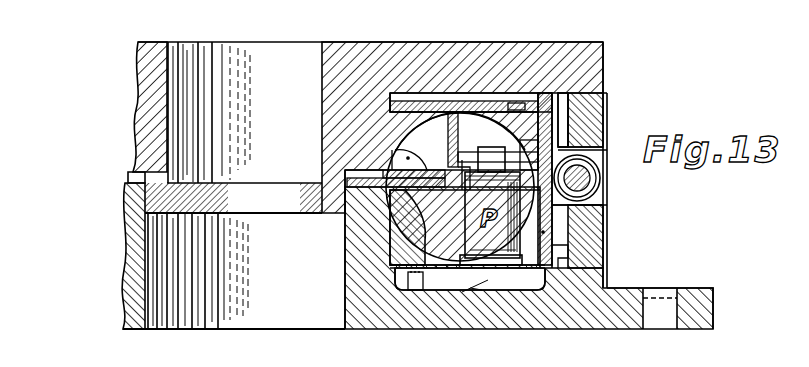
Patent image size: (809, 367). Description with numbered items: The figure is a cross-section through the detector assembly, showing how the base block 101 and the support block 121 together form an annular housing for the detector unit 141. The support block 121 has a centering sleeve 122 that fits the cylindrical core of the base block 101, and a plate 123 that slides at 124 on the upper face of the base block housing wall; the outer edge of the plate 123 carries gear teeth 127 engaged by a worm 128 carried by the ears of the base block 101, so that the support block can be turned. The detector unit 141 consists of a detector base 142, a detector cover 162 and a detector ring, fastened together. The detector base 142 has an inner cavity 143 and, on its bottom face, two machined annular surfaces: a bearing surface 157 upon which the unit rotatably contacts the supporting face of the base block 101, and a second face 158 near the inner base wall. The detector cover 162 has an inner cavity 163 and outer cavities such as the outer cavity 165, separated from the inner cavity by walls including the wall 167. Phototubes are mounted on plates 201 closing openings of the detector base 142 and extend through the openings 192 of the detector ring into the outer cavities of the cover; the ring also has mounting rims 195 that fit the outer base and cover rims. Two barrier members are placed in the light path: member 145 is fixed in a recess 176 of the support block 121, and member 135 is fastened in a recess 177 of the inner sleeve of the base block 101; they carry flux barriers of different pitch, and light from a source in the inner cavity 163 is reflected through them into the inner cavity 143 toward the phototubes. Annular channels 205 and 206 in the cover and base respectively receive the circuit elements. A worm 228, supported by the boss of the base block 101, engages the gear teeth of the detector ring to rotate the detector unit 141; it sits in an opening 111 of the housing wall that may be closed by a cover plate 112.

The base block 101 is at (130, 258).
The support block 121 is at (138, 92).
The centering sleeve 122 is at (222, 205).
The plate 123 is at (560, 43).
The sliding surface 124 is at (565, 128).
The gear teeth 127 is at (604, 65).
The worm 128 is at (700, 329).
The barrier member 135 is at (348, 262).
The detector unit 141 is at (450, 102).
The detector base 142 is at (545, 232).
The inner cavity 143 is at (400, 237).
The barrier member 145 is at (418, 146).
The bearing surface 157 is at (556, 262).
The second annular face 158 is at (430, 292).
The detector cover 162 is at (590, 107).
The inner cavity 163 is at (405, 158).
The outer cavity 165 is at (498, 144).
The wall 167 is at (447, 135).
The recess 176 is at (375, 172).
The recess 177 is at (392, 192).
The openings 192 is at (460, 180).
The mounting rims 195 is at (555, 206).
The plates 201 is at (518, 283).
The annular channel 205 is at (512, 102).
The annular channel 206 is at (472, 292).
The worm 228 is at (583, 156).
The opening 111 is at (605, 165).
The cover plate 112 is at (605, 222).